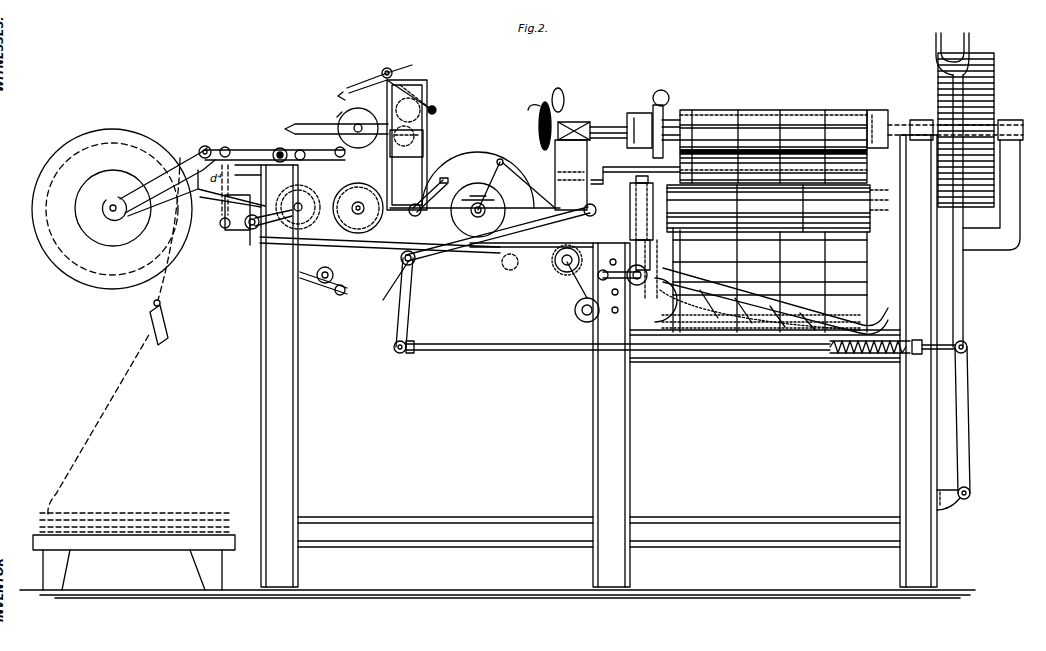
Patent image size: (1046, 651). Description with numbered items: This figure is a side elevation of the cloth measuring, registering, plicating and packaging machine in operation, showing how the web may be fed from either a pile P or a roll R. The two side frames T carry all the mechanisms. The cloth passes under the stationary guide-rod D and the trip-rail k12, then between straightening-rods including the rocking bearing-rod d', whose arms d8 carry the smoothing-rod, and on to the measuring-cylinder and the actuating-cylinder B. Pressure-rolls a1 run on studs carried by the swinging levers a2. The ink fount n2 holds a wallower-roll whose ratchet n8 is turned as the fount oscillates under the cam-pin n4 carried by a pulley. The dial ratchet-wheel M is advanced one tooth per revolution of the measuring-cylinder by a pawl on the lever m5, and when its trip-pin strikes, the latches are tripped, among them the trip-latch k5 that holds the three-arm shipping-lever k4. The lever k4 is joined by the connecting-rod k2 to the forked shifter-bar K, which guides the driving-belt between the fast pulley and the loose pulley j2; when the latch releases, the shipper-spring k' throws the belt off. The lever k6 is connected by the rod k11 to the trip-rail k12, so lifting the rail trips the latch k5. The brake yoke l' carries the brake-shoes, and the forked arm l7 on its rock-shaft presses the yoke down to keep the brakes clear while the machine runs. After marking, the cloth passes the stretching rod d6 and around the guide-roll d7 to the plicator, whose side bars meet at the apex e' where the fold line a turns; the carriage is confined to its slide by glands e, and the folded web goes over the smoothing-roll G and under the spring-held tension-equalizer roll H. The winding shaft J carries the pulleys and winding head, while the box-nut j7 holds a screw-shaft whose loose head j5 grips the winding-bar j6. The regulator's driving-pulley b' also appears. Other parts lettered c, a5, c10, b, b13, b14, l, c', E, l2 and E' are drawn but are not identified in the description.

The roll R is at (110, 145).
The pile P is at (134, 461).
The side frames T is at (599, 361).
The roll bracket c is at (192, 176).
The stationary guide-rod D is at (269, 145).
The trip-rail k12 is at (228, 143).
The bearing-rod d' is at (297, 146).
The rod k11 is at (226, 197).
The lever k6 is at (253, 233).
The forked arm l7 is at (375, 239).
The dial ratchet-wheel M is at (296, 203).
The lever m5 is at (358, 206).
The ink fount n2 is at (323, 281).
The line of plication a is at (354, 145).
The cam disks a5 is at (407, 125).
The disk c10 is at (357, 118).
The pressure-rolls a1 is at (382, 79).
The swinging levers a2 is at (424, 102).
The actuating-cylinder B is at (475, 179).
The wheel b is at (478, 210).
The cam-pin n4 is at (516, 184).
The block b13 is at (418, 143).
The rod b14 is at (428, 195).
The ratchet n8 is at (507, 227).
The three-arm crank-lever k4 is at (407, 302).
The connecting-rod k2 is at (618, 354).
The shipper-spring k' is at (892, 360).
The forked shifter-bar K is at (958, 263).
The loose pulley j2 is at (963, 130).
The winding shaft J is at (960, 122).
The frame arm l is at (991, 195).
The driving-pulley of the regulator b' is at (793, 138).
The smoothing-roll G is at (781, 200).
The lower frame section c' is at (771, 280).
The apex of the side bars e' is at (776, 308).
The roller E is at (757, 304).
The yoke l' is at (571, 175).
The tension-equalizer roll H is at (635, 168).
The box-nut j7 is at (592, 120).
The loose revolving head j5 is at (645, 124).
The winding-bar j6 is at (670, 116).
The lever handle l2 is at (541, 116).
The glands e is at (623, 244).
The roller E' is at (643, 275).
The guide-roll d7 is at (558, 271).
The arms d8 is at (579, 310).
The stretching rod d6 is at (524, 255).
The trip-latch k5 is at (152, 322).